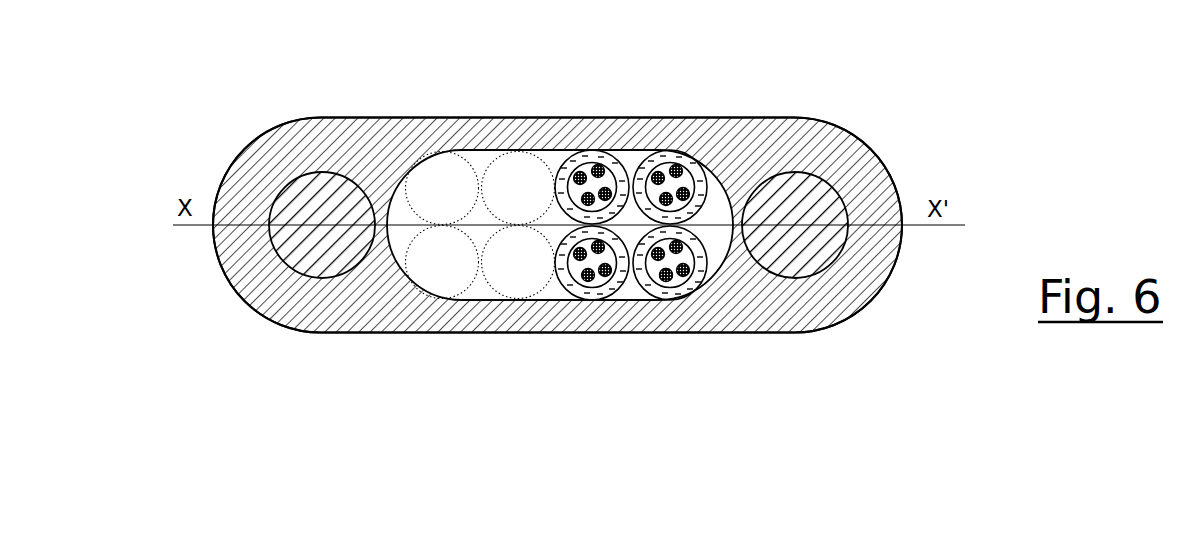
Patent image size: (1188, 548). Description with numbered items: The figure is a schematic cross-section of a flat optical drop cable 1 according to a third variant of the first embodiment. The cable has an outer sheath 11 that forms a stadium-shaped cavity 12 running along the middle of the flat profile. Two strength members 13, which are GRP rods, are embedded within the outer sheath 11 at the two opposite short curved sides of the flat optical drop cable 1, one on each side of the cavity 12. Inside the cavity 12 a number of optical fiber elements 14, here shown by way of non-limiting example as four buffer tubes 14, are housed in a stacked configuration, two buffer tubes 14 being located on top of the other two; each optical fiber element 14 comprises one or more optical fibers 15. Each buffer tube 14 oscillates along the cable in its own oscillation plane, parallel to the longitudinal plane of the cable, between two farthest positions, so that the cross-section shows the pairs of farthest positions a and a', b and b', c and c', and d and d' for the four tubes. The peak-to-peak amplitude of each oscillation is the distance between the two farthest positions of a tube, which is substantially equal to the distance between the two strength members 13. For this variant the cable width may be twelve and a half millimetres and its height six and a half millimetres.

The flat optical drop cable 1 is at (237, 115).
The outer sheath 11 is at (848, 140).
The cavity 12 is at (407, 212).
The strength members 13 is at (318, 270).
The optical fiber element 14 is at (746, 155).
The optical fiber 15 is at (668, 281).
The farthest position a is at (603, 312).
The farthest position b is at (680, 312).
The farthest position c is at (592, 136).
The farthest position d is at (670, 136).
The farthest position a' is at (456, 313).
The farthest position b' is at (532, 313).
The farthest position c' is at (442, 136).
The farthest position d' is at (518, 136).